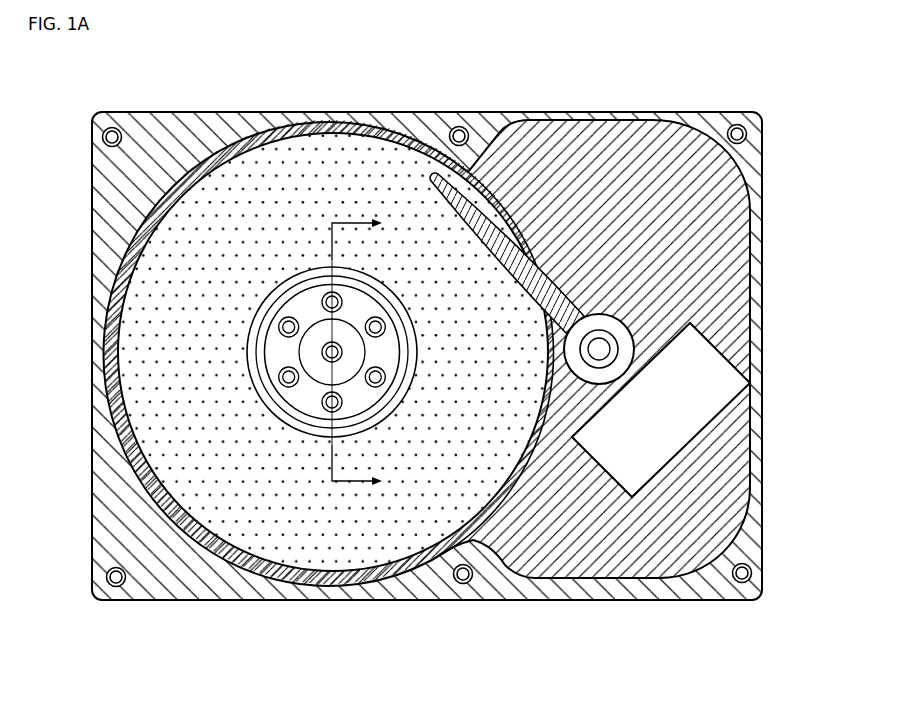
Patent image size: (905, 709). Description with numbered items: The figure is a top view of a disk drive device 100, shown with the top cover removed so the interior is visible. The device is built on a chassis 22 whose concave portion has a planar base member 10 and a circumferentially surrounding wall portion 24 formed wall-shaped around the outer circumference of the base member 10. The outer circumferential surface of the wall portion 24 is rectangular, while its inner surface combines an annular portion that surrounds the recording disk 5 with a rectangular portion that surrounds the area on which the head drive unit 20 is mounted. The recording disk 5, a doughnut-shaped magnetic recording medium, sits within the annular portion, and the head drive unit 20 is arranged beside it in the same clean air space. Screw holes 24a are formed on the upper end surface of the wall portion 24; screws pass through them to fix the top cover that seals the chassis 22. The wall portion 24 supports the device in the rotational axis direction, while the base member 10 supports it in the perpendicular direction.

The recording disk 5 is at (342, 160).
The base member 10 is at (553, 146).
The head drive unit 20 is at (710, 400).
The chassis 22 is at (779, 288).
The circumferentially surrounding wall portion 24 is at (166, 128).
The screw holes 24a is at (109, 127).
The disk drive device 100 is at (398, 691).